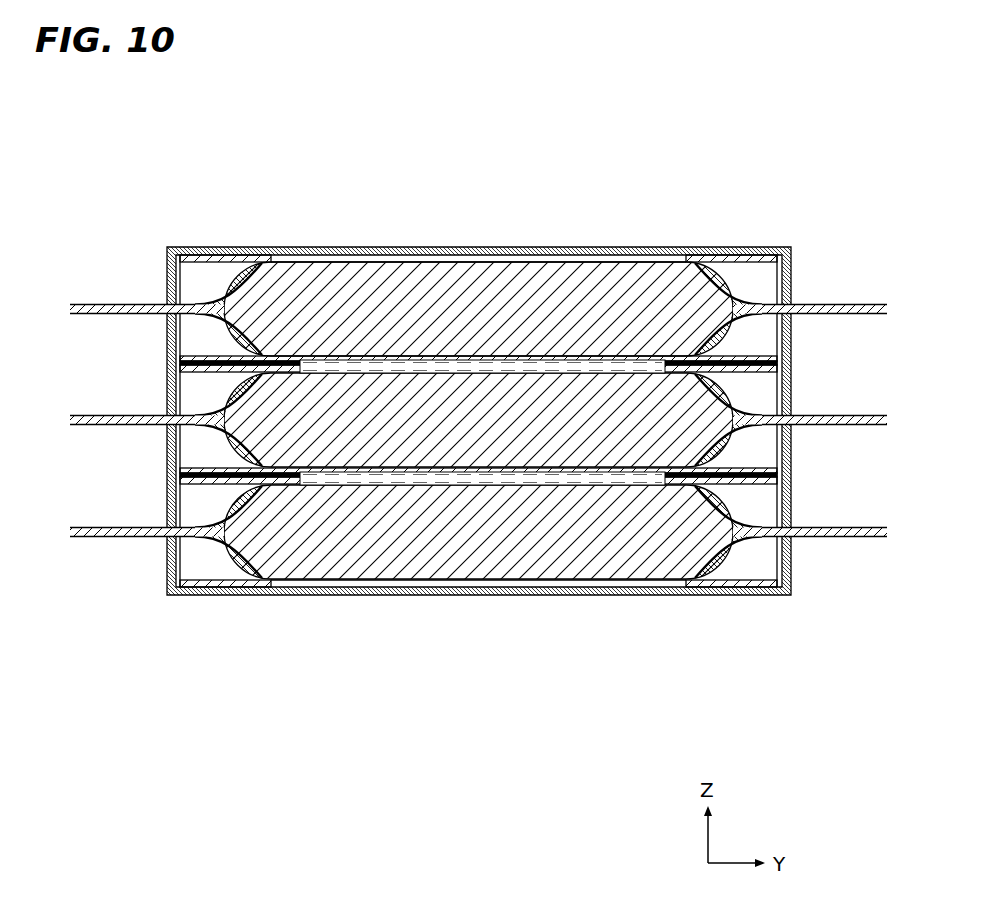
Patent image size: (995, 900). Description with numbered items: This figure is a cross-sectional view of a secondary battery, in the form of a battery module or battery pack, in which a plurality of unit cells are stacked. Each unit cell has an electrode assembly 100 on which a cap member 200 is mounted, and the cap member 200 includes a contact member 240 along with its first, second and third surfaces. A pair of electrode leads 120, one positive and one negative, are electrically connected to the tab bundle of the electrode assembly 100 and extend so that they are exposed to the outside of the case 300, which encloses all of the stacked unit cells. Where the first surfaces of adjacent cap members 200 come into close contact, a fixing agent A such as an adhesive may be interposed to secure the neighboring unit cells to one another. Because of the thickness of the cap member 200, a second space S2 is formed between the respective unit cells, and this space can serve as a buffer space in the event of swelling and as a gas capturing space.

The electrode assembly 100 is at (339, 302).
The electrode leads 120 is at (96, 304).
The cap member 200 is at (478, 406).
The contact member 240 is at (719, 262).
The case 300 is at (202, 595).
The second space S2 is at (481, 360).
The fixing agent A is at (770, 349).